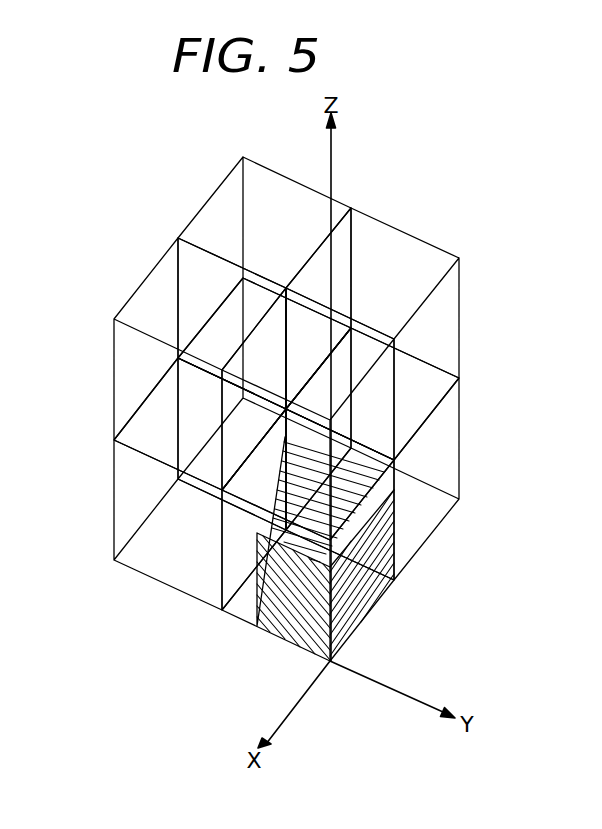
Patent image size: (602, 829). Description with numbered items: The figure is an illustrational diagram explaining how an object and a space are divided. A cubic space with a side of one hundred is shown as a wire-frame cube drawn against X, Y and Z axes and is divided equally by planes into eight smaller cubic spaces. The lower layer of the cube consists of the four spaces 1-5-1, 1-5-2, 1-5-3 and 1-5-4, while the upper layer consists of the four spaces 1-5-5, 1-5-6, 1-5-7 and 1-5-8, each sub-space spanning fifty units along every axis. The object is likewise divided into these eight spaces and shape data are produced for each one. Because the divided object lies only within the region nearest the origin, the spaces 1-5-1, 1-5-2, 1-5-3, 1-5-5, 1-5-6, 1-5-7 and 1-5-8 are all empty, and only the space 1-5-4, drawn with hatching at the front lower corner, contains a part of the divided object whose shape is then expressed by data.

The divided space 1-5-1 is at (195, 413).
The divided space 1-5-2 is at (133, 493).
The divided space 1-5-3 is at (433, 450).
The divided space 1-5-4 is at (242, 608).
The divided space 1-5-5 is at (231, 208).
The divided space 1-5-6 is at (137, 353).
The divided space 1-5-7 is at (398, 253).
The divided space 1-5-8 is at (380, 393).